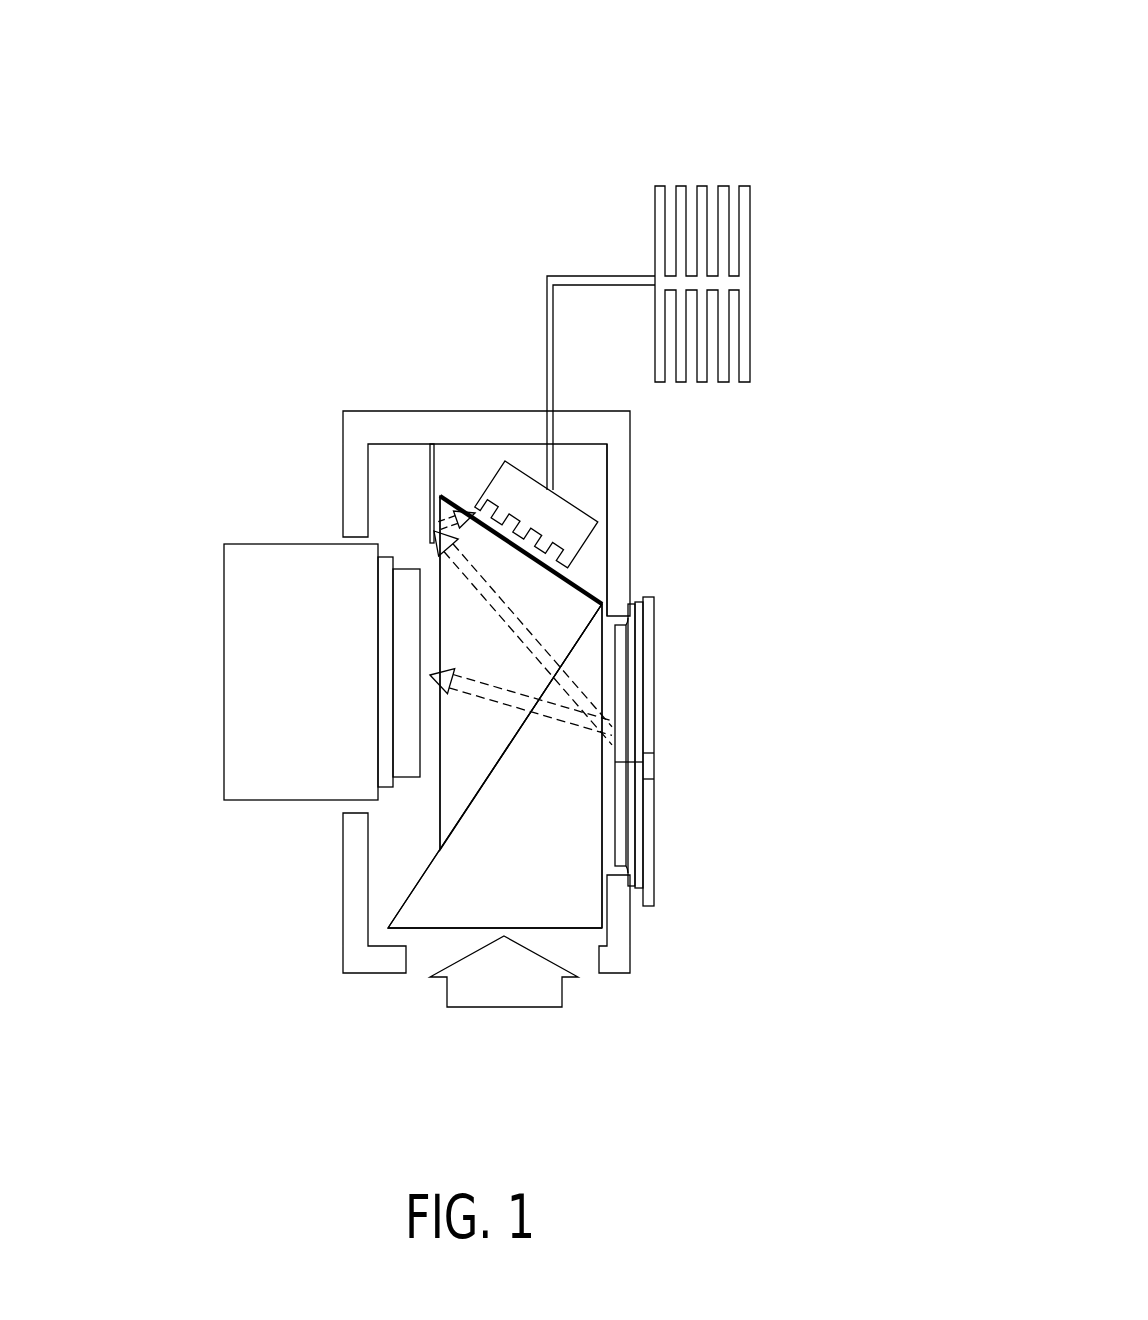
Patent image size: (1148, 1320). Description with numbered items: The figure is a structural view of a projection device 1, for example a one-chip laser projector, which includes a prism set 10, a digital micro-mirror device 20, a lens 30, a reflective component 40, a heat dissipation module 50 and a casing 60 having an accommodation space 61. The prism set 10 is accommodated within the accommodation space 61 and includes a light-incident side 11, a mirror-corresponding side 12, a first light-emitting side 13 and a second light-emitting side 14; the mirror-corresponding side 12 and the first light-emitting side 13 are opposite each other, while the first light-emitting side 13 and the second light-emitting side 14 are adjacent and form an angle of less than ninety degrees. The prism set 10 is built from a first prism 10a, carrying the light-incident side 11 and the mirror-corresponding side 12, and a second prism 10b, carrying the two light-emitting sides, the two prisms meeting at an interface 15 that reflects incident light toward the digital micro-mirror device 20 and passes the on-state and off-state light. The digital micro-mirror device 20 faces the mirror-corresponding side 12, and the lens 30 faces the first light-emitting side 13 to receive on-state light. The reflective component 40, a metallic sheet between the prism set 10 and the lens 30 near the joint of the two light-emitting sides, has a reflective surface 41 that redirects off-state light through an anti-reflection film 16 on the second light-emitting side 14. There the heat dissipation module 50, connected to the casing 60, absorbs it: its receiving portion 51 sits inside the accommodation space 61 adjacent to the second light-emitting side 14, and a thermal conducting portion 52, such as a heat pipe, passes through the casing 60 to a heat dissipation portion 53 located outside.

The projection device 1 is at (866, 36).
The prism set 10 is at (530, 704).
The first prism 10a is at (587, 662).
The second prism 10b is at (565, 612).
The light-incident side 11 is at (490, 928).
The mirror-corresponding side 12 is at (603, 831).
The first light-emitting side 13 is at (440, 798).
The second light-emitting side 14 is at (595, 533).
The interface 15 is at (497, 768).
The anti-reflection film 16 is at (457, 505).
The digital micro-mirror device 20 is at (648, 742).
The lens 30 is at (290, 665).
The reflective component 40 is at (356, 441).
The reflective surface 41 is at (432, 460).
The heat dissipation module 50 is at (571, 353).
The receiving portion 51 is at (527, 490).
The thermal conducting portion 52 is at (585, 280).
The heat dissipation portion 53 is at (657, 232).
The casing 60 is at (372, 422).
The accommodation space 61 is at (585, 470).